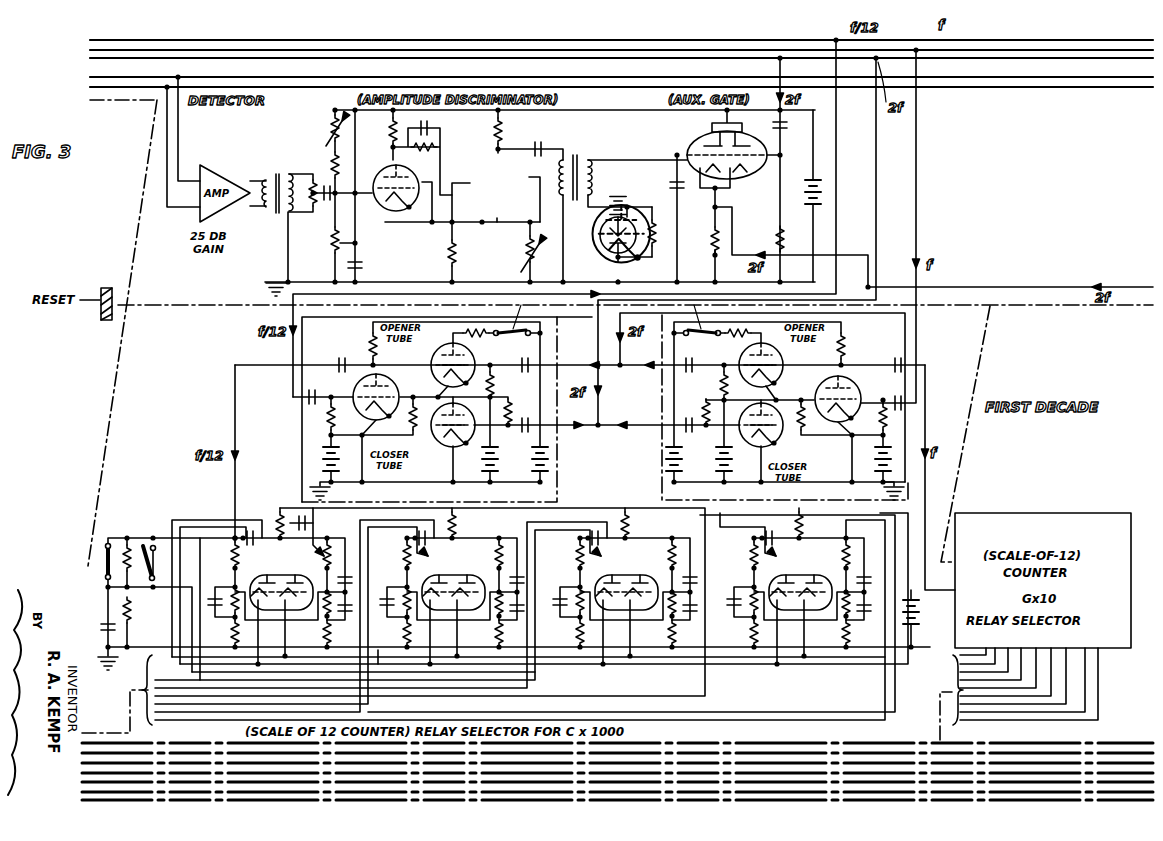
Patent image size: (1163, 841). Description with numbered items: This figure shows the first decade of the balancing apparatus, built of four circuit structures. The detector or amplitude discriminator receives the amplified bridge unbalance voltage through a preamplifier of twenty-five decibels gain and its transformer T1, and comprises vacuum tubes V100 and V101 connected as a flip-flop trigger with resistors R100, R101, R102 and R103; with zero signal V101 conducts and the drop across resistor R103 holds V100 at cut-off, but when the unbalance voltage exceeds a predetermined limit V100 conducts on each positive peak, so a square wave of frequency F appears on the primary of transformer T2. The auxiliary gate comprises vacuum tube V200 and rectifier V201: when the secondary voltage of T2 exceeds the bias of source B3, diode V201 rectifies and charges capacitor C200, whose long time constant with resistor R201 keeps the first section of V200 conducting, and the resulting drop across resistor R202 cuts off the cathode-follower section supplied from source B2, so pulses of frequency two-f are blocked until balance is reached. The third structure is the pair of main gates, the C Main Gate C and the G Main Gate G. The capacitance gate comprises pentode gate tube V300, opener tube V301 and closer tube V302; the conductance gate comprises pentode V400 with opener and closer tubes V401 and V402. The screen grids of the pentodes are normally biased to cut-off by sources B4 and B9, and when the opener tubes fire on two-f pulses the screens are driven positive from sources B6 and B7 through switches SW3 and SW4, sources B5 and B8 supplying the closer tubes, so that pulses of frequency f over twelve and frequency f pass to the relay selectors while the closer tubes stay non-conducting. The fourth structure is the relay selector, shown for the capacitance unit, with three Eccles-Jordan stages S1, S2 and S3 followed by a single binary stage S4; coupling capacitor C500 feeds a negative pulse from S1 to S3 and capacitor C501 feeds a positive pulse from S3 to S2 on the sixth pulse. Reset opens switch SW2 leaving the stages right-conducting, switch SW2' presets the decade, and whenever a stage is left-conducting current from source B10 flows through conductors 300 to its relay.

The input transformer T1 is at (283, 217).
The variable resistor R100 is at (333, 121).
The potentiometer R101 is at (334, 245).
The variable resistor R102 is at (525, 264).
The resistor R103 is at (452, 254).
The vacuum tube V100 is at (389, 158).
The vacuum tube V101 is at (486, 158).
The transformer T2 is at (623, 208).
The vacuum tube V200 is at (714, 158).
The rectifier tube V201 is at (601, 230).
The capacitor C200 is at (660, 218).
The resistor R201 is at (660, 248).
The resistor R202 is at (712, 246).
The battery B2 is at (820, 208).
The source B3 is at (626, 273).
The C Main Gate C is at (352, 382).
The G Main Gate G is at (856, 384).
The gate tube V300 is at (392, 374).
The opener tube V301 is at (467, 360).
The closer tube V302 is at (459, 419).
The switch SW3 is at (530, 335).
The switch SW4 is at (686, 335).
The source B4 is at (320, 459).
The battery B5 is at (490, 454).
The source B6 is at (544, 471).
The vacuum tube V400 is at (823, 384).
The opener tube V401 is at (749, 360).
The closer tube V402 is at (773, 440).
The source B7 is at (670, 468).
The battery B8 is at (722, 455).
The source B9 is at (880, 454).
The switch SW2 is at (81, 555).
The switch SW2' is at (152, 536).
The conductors 300 is at (211, 520).
The selector stage S1 is at (280, 587).
The selector stage S2 is at (452, 587).
The selector stage S3 is at (625, 587).
The selector stage S4 is at (799, 587).
The capacitor C500 is at (315, 533).
The capacitor C501 is at (378, 664).
The source B10 is at (910, 626).